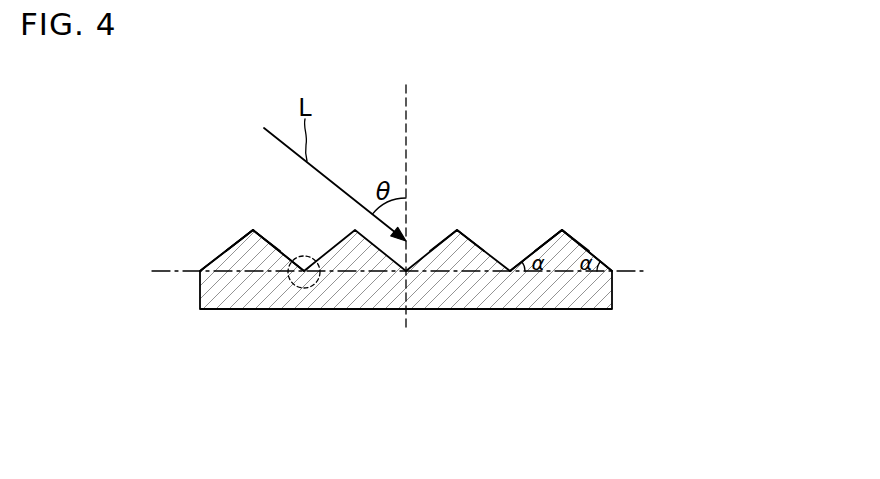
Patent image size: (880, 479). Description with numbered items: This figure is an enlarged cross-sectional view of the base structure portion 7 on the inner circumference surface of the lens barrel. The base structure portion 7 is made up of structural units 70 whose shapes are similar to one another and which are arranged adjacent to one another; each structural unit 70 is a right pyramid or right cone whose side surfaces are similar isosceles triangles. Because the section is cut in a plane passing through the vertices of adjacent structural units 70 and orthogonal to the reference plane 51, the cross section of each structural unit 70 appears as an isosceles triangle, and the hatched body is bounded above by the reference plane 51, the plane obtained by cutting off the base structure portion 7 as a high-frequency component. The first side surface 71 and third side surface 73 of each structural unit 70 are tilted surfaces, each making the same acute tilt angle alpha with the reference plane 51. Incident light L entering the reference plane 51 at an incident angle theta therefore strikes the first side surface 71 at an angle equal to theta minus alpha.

The base structure portion 7 is at (600, 262).
The reference plane 51 is at (652, 271).
The structural unit 70 is at (246, 235).
The first side surface 71 is at (221, 255).
The third side surface 73 is at (274, 248).